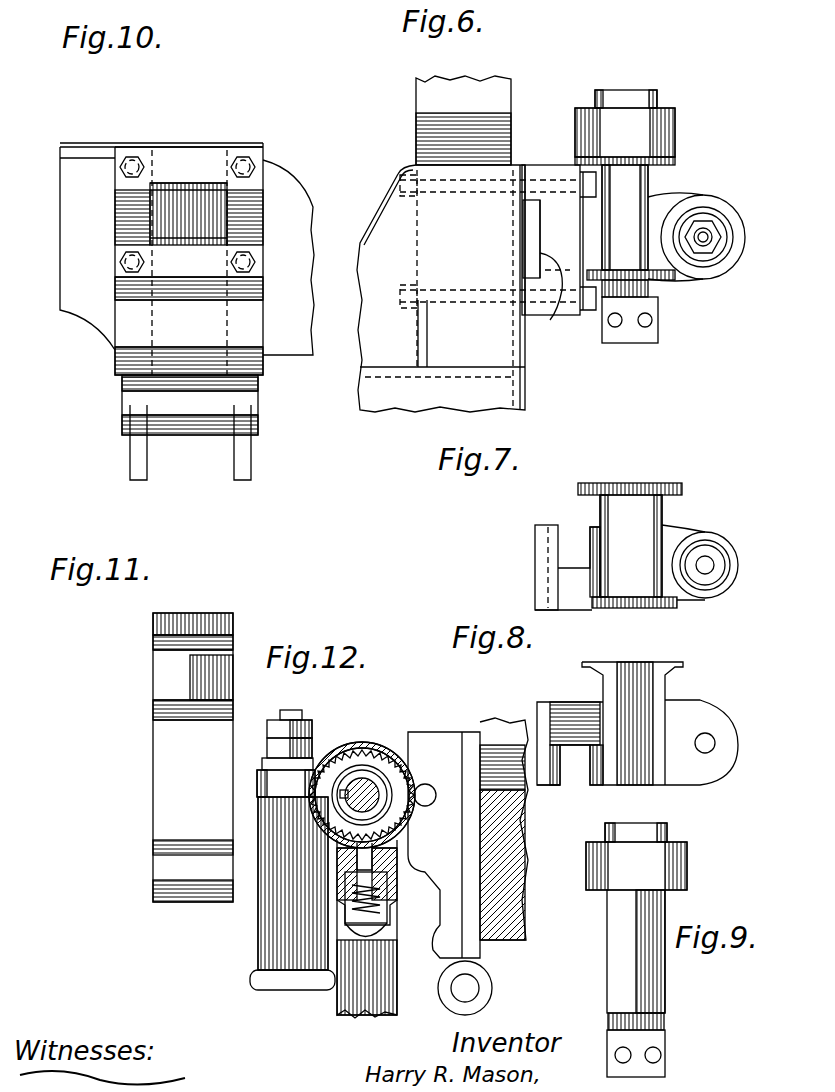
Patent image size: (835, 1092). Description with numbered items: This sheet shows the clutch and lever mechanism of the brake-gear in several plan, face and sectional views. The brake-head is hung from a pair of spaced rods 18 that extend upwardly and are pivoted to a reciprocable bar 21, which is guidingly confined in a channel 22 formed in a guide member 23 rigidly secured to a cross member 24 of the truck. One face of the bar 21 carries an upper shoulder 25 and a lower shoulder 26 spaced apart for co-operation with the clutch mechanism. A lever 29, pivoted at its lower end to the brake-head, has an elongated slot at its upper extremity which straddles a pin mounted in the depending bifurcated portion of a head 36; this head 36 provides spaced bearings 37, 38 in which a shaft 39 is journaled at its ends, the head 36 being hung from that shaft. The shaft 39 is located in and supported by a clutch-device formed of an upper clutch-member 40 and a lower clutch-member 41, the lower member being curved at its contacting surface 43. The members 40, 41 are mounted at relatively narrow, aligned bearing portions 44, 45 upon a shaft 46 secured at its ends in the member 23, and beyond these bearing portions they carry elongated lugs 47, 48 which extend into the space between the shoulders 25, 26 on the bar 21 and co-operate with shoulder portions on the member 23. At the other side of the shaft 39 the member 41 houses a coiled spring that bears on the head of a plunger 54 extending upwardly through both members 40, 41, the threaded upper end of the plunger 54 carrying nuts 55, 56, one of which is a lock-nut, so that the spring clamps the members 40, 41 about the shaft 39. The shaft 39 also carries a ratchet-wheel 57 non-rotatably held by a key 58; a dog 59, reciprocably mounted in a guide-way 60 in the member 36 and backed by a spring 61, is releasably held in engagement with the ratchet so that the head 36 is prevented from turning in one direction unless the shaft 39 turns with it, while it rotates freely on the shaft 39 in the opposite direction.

In FIG. 10, the rods 18 is at (135, 466).
In FIG. 10, the reciprocable bar 21 is at (185, 395).
In FIG. 6, the reciprocable bar 21 is at (530, 248).
In FIG. 11, the reciprocable bar 21 is at (170, 790).
In FIG. 12, the reciprocable bar 21 is at (478, 965).
In FIG. 6, the channel 22 is at (560, 296).
In FIG. 10, the guide member 23 is at (190, 160).
In FIG. 6, the guide member 23 is at (543, 172).
In FIG. 12, the guide member 23 is at (470, 882).
In FIG. 10, the cross member 24 is at (62, 252).
In FIG. 6, the cross member 24 is at (463, 120).
In FIG. 12, the cross member 24 is at (512, 860).
In FIG. 10, the upper shoulder 25 is at (222, 205).
In FIG. 11, the upper shoulder 25 is at (155, 655).
In FIG. 10, the lower shoulder 26 is at (225, 238).
In FIG. 11, the lower shoulder 26 is at (160, 697).
In FIG. 12, the lever 29 is at (350, 990).
In FIG. 9, the head 36 is at (618, 910).
In FIG. 12, the head 36 is at (340, 882).
In FIG. 6, the bearing 37 is at (648, 288).
In FIG. 9, the bearing 37 is at (667, 1017).
In FIG. 6, the bearing 38 is at (638, 100).
In FIG. 9, the bearing 38 is at (672, 858).
In FIG. 12, the shaft 39 is at (378, 790).
In FIG. 6, the upper clutch-member 40 is at (666, 223).
In FIG. 7, the upper clutch-member 40 is at (690, 538).
In FIG. 12, the upper clutch-member 40 is at (258, 780).
In FIG. 8, the lower clutch-member 41 is at (688, 715).
In FIG. 12, the lower clutch-member 41 is at (275, 950).
In FIG. 8, the curved surface 43 is at (637, 678).
In FIG. 6, the bearing portion 44 is at (545, 271).
In FIG. 7, the bearing portion 44 is at (565, 595).
In FIG. 6, the bearing portion 45 is at (535, 222).
In FIG. 8, the bearing portion 45 is at (575, 712).
In FIG. 12, the shaft 46 is at (427, 806).
In FIG. 7, the elongated lug 47 is at (535, 548).
In FIG. 8, the elongated lug 48 is at (545, 780).
In FIG. 6, the plunger 54 is at (705, 232).
In FIG. 12, the plunger 54 is at (285, 714).
In FIG. 12, the nut 55 is at (312, 750).
In FIG. 6, the nut 56 is at (714, 230).
In FIG. 12, the nut 56 is at (305, 722).
In FIG. 12, the ratchet-wheel 57 is at (372, 760).
In FIG. 12, the key 58 is at (340, 797).
In FIG. 12, the dog 59 is at (357, 850).
In FIG. 12, the guide-way 60 is at (345, 868).
In FIG. 12, the spring 61 is at (348, 912).